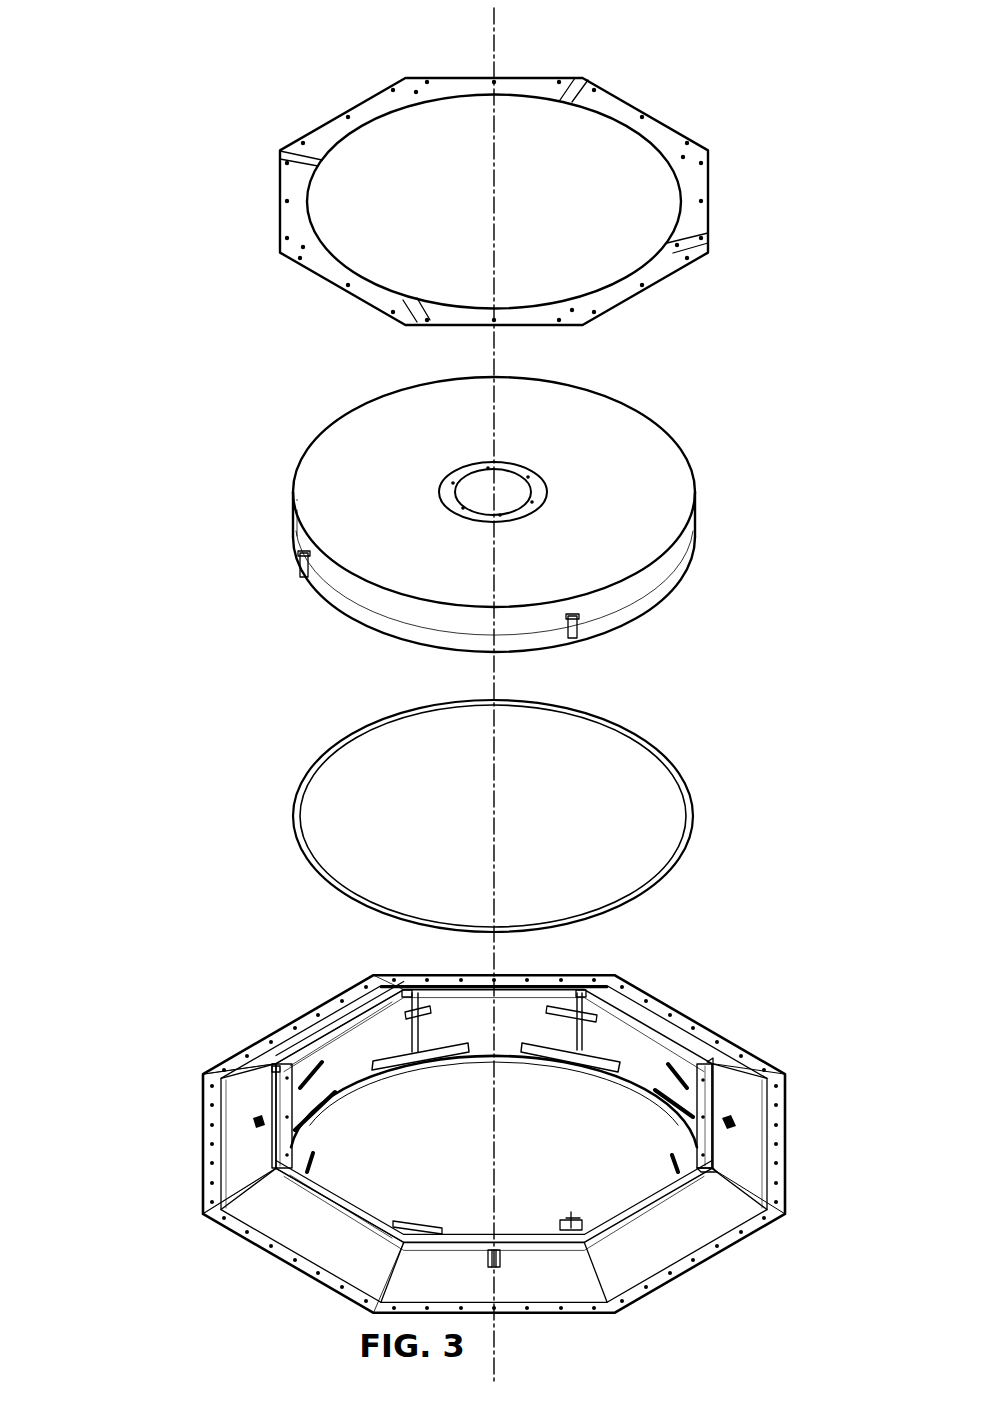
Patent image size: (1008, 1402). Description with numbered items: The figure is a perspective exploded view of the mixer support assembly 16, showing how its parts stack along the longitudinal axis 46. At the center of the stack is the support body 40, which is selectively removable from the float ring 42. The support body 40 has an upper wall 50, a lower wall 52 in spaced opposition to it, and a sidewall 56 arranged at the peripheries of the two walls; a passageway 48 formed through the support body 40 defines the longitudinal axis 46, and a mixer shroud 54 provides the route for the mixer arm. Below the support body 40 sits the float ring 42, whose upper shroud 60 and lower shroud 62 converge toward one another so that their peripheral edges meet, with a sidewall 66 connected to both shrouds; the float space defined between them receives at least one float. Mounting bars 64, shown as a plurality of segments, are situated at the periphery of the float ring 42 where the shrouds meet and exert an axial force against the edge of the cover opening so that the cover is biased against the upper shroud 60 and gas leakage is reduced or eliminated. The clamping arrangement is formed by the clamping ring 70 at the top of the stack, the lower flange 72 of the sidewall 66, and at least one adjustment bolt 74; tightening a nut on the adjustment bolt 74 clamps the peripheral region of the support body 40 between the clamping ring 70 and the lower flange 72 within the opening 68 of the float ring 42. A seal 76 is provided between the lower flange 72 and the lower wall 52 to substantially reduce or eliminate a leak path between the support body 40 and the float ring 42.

The mixer support assembly 16 is at (190, 147).
The support body 40 is at (298, 467).
The float ring 42 is at (238, 1112).
The longitudinal axis 46 is at (493, 21).
The passageway 48 is at (553, 477).
The upper wall 50 is at (690, 467).
The lower wall 52 is at (677, 585).
The mixer shroud 54 is at (477, 492).
The sidewall 56 is at (298, 535).
The upper shroud 60 is at (750, 1112).
The lower shroud 62 is at (728, 1252).
The mounting bars 64 is at (265, 1040).
The sidewall 66 is at (663, 1065).
The opening 68 is at (408, 1085).
The clamping ring 70 is at (325, 138).
The lower flange 72 is at (690, 1095).
The adjustment bolt 74 is at (413, 1040).
The seal 76 is at (335, 752).